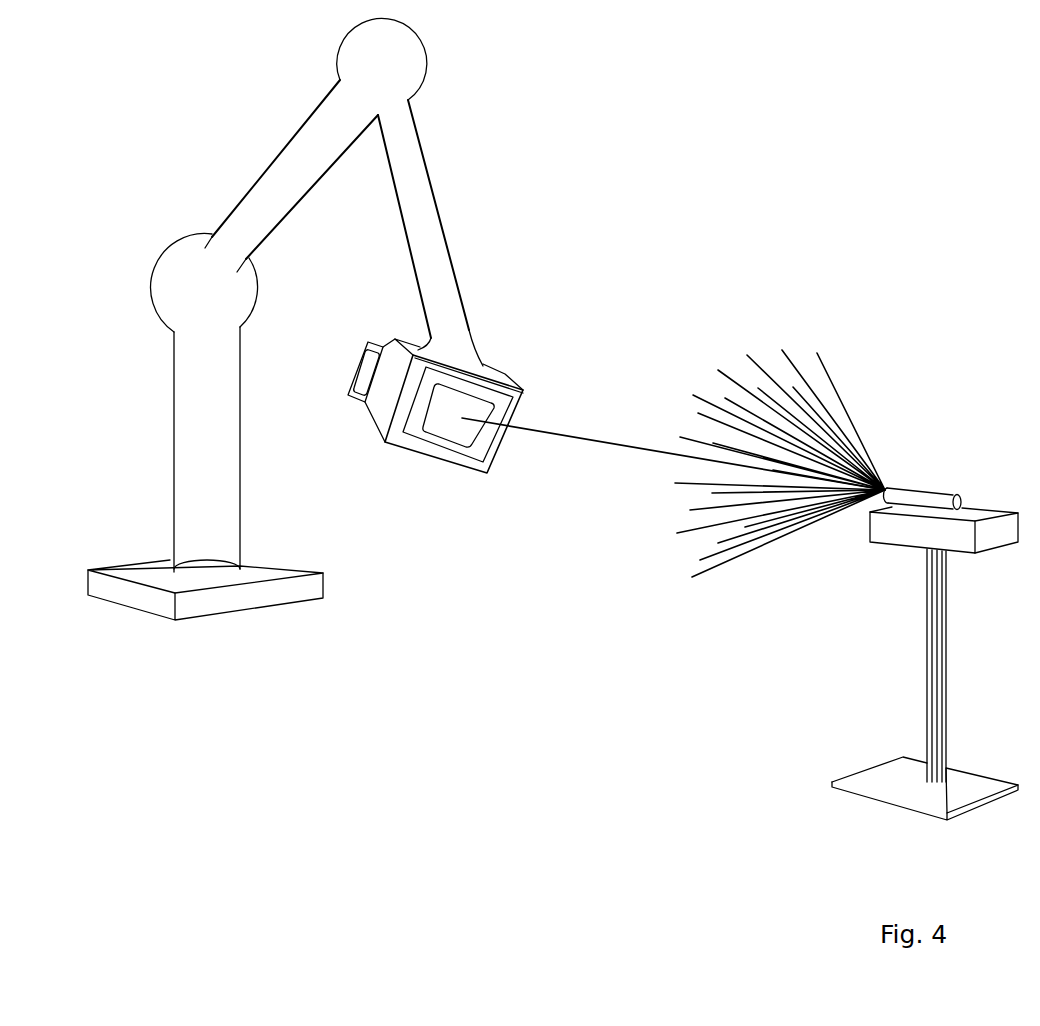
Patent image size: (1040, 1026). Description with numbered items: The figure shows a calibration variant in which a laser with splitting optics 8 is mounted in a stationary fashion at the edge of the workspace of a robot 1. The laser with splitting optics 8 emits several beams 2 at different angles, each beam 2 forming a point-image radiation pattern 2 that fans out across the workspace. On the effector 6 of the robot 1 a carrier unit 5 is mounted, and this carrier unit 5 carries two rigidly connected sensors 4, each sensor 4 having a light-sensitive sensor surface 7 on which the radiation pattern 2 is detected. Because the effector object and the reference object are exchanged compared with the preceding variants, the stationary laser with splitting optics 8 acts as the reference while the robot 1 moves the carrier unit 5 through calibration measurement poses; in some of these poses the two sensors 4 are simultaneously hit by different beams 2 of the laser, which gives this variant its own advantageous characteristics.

The robot 1 is at (268, 300).
The radiation pattern 2 is at (612, 458).
The sensor 4 is at (352, 397).
The carrier unit 5 is at (527, 392).
The effector 6 is at (480, 368).
The light-sensitive sensor surface 7 is at (367, 368).
The laser with splitting optics 8 is at (930, 498).